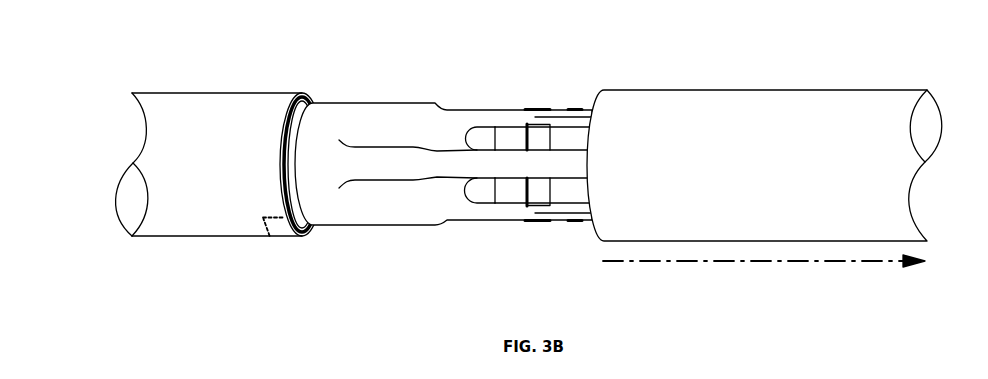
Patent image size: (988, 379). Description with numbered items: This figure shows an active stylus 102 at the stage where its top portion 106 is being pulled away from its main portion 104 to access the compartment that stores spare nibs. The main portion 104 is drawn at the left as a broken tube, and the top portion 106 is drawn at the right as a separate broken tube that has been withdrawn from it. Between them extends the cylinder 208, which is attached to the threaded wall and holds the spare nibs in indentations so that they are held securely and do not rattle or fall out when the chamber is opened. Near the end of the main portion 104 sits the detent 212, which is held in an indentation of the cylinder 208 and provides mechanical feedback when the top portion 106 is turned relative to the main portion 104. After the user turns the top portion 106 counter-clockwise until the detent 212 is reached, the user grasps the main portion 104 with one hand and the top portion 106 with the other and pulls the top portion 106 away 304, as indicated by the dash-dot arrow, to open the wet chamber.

The stylus 102 is at (132, 93).
The main portion 104 is at (235, 92).
The top portion 106 is at (673, 88).
The cylinder 208 is at (395, 103).
The detent 212 is at (270, 237).
The pulling away direction 304 is at (730, 261).